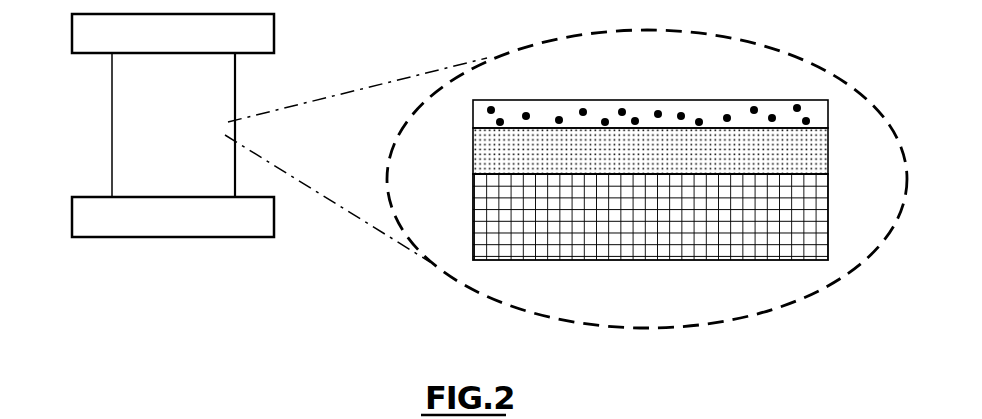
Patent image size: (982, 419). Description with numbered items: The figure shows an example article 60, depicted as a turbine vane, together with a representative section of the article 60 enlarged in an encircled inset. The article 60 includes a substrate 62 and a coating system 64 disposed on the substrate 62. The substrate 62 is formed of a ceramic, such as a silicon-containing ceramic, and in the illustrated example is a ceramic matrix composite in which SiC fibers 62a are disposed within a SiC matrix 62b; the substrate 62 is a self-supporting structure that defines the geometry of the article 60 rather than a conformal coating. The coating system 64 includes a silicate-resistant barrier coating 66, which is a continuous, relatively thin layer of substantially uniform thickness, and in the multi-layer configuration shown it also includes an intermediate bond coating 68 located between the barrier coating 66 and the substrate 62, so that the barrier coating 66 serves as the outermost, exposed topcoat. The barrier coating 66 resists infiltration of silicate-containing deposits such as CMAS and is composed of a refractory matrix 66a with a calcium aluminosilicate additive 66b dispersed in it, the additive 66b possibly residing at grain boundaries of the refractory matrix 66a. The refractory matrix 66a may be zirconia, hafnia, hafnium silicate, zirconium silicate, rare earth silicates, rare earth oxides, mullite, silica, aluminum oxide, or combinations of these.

The article 60 is at (80, 144).
The substrate 62 is at (828, 220).
The SiC fibers 62a is at (600, 243).
The SiC matrix 62b is at (572, 244).
The coating system 64 is at (653, 122).
The silicate-resistant barrier coating 66 is at (624, 106).
The refractory matrix 66a is at (546, 112).
The calcium aluminosilicate additive 66b is at (587, 113).
The intermediate bond coating 68 is at (473, 158).